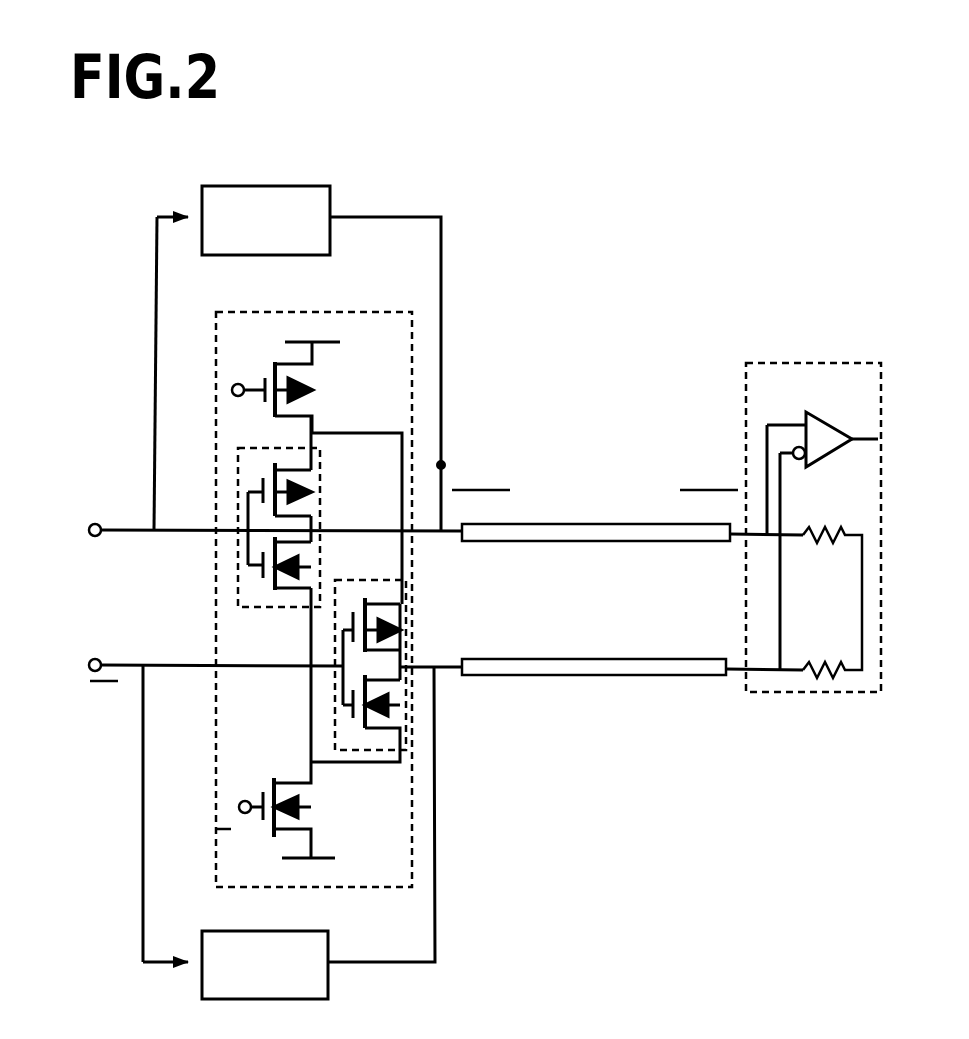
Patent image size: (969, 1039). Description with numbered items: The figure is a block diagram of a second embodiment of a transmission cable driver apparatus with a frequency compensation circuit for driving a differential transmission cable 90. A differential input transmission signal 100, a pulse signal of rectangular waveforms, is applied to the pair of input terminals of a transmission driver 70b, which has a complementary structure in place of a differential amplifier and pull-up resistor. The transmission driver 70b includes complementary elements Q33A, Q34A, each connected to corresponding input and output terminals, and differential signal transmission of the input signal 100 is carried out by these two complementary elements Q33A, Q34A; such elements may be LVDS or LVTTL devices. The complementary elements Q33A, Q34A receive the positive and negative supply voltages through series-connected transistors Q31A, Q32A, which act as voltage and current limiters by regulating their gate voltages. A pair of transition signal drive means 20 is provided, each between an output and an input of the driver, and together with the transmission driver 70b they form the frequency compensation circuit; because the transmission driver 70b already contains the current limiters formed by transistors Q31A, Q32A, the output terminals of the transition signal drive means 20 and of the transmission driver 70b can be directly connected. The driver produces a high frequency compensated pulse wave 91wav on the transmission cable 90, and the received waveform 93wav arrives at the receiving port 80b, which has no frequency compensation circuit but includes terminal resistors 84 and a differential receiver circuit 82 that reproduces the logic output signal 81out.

The transition signal drive means 20 is at (266, 592).
The input transmission signal 100 is at (82, 653).
The transmission driver 70b is at (315, 311).
The transistor Q31A is at (312, 387).
The transistor Q32A is at (316, 810).
The complementary element Q33A is at (321, 489).
The complementary element Q34A is at (321, 563).
The transmission cable 90 is at (508, 543).
The pulse wave 91wav is at (454, 545).
The received waveform 93wav is at (737, 548).
The receiving port 80b is at (787, 693).
The differential receiver circuit 82 is at (835, 407).
The output signal 81out is at (869, 435).
The terminal resistors 84 is at (832, 550).